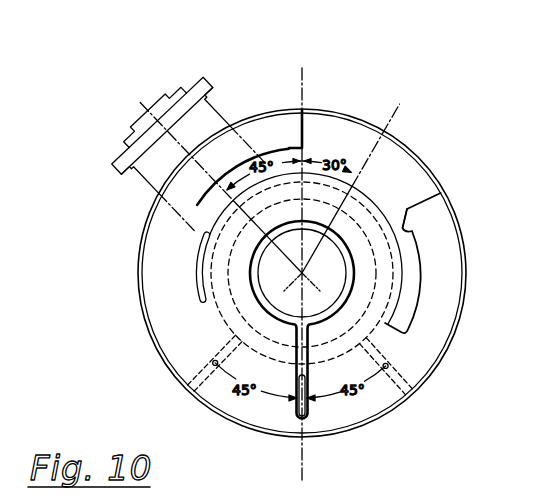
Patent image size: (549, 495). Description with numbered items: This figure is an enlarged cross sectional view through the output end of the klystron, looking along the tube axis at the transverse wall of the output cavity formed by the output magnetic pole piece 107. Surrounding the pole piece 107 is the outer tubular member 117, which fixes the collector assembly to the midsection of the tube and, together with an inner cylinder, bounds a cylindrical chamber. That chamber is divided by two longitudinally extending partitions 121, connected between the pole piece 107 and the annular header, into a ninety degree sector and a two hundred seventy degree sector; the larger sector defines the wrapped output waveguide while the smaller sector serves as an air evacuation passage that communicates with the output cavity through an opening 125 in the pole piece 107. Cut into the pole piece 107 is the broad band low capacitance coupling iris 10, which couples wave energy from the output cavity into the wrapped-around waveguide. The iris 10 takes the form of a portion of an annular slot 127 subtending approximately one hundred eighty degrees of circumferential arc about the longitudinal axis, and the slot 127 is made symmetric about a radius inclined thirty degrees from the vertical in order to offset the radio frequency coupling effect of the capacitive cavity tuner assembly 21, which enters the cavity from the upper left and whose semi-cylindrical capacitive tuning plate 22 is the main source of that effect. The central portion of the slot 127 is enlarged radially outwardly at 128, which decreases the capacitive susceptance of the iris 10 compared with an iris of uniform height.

The coupling iris 10 is at (413, 233).
The capacitive cavity tuner assembly 21 is at (230, 91).
The capacitive tuning plate 22 is at (200, 272).
The output magnetic pole piece 107 is at (200, 331).
The outer tubular member 117 is at (254, 430).
The longitudinally extending partitions 121 is at (200, 363).
The opening 125 is at (306, 409).
The annular slot 127 is at (411, 298).
The radially enlarged central portion 128 is at (424, 182).